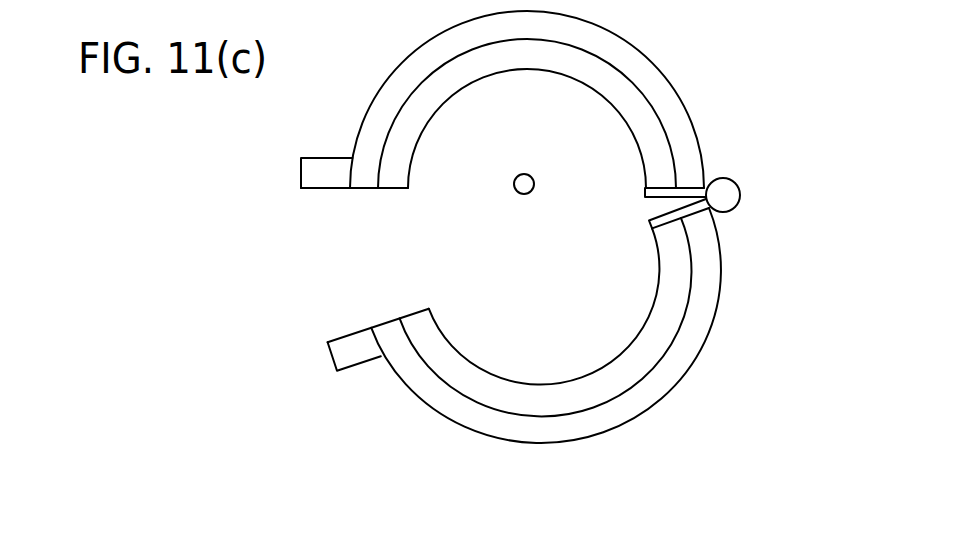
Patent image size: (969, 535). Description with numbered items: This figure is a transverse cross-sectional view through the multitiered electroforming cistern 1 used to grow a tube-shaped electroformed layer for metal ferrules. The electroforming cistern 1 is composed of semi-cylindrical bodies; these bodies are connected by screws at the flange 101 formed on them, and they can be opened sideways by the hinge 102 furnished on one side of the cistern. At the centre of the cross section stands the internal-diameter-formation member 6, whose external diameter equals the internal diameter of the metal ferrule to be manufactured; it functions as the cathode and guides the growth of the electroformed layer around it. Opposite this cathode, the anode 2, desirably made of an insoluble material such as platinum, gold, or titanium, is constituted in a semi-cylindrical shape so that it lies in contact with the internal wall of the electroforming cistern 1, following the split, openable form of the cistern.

The electroforming cistern 1 is at (666, 97).
The anode 2 is at (666, 147).
The internal-diameter-formation member 6 is at (514, 181).
The flange 101 is at (303, 178).
The hinge 102 is at (740, 192).